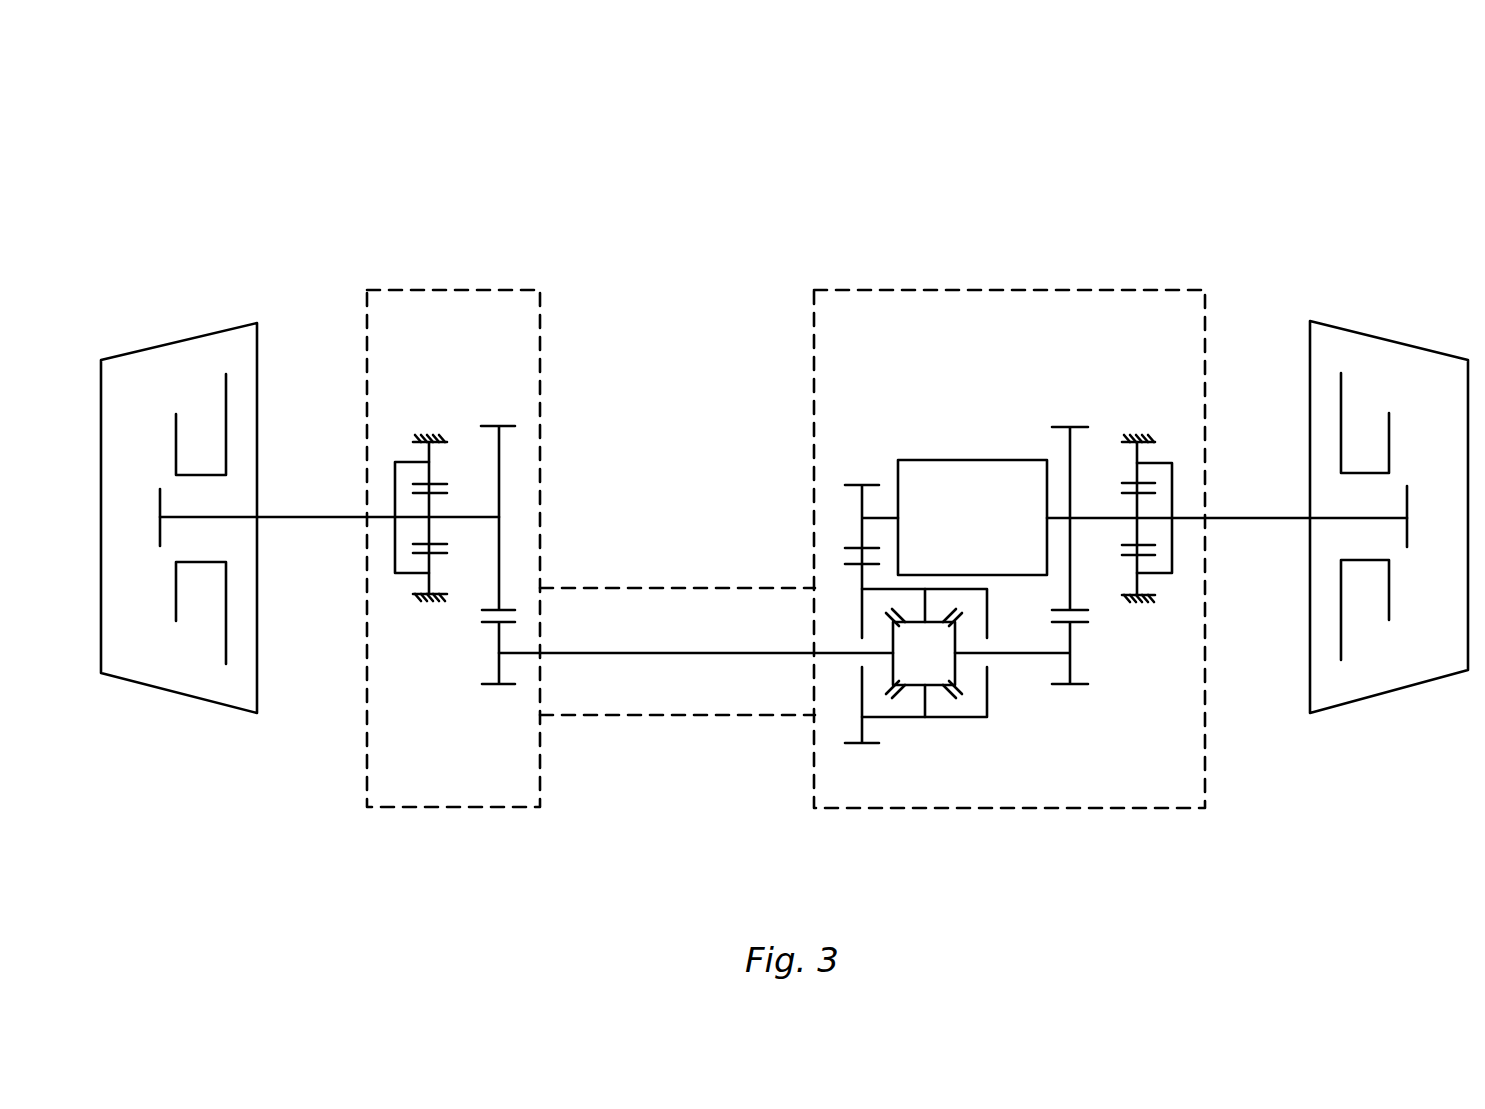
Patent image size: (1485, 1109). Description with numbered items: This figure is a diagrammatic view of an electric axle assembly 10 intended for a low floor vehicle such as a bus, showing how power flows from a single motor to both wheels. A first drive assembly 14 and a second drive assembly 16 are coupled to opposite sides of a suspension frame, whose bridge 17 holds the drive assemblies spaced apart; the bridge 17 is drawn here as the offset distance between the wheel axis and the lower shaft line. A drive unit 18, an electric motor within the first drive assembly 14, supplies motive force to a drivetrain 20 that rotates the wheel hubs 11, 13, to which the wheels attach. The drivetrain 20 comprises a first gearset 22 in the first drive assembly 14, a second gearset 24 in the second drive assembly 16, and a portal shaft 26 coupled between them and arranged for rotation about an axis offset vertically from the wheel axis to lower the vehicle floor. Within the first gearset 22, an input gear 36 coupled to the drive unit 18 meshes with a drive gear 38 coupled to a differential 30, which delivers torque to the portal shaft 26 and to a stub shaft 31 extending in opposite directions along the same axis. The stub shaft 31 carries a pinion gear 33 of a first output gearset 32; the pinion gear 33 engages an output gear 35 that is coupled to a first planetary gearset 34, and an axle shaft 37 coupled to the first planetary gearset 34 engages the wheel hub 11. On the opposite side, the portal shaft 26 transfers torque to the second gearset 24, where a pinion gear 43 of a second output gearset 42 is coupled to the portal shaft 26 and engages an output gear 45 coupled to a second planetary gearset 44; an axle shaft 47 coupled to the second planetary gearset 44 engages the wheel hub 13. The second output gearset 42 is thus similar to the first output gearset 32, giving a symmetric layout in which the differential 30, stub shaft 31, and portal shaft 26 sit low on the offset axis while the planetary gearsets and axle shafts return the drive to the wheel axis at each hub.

The electric axle assembly 10 is at (1263, 185).
The wheel hub 11 is at (1387, 323).
The wheel hub 13 is at (192, 337).
The first drive assembly 14 is at (928, 274).
The second drive assembly 16 is at (494, 272).
The bridge 17 is at (702, 717).
The drive unit 18 is at (910, 441).
The drivetrain 20 is at (342, 730).
The first gearset 22 is at (1120, 757).
The second gearset 24 is at (440, 750).
The portal shaft 26 is at (640, 657).
The differential 30 is at (922, 732).
The stub shaft 31 is at (1028, 678).
The first output gearset 32 is at (1063, 410).
The pinion gear 33 is at (1092, 658).
The first planetary gearset 34 is at (1142, 397).
The output gear 35 is at (1040, 432).
The input gear 36 is at (850, 470).
The axle shaft 37 is at (1266, 510).
The drive gear 38 is at (833, 555).
The second output gearset 42 is at (501, 410).
The pinion gear 43 is at (512, 690).
The second planetary gearset 44 is at (428, 412).
The output gear 45 is at (475, 610).
The axle shaft 47 is at (308, 505).